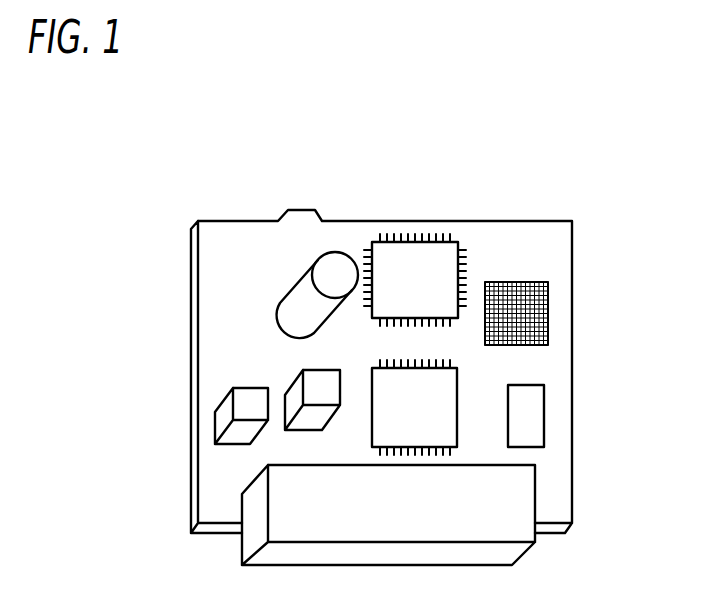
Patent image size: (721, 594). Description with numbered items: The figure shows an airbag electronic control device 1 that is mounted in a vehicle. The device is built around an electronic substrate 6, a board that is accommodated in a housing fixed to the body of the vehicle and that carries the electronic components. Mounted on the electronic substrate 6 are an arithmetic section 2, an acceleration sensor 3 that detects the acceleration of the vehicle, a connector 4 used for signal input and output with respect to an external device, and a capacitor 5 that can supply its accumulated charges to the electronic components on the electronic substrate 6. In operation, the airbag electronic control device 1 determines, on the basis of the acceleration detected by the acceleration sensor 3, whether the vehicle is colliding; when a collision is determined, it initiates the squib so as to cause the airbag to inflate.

The airbag electronic control device 1 is at (330, 299).
The arithmetic section 2 is at (437, 268).
The acceleration sensor 3 is at (548, 325).
The connector 4 is at (517, 510).
The capacitor 5 is at (337, 265).
The electronic substrate 6 is at (240, 308).